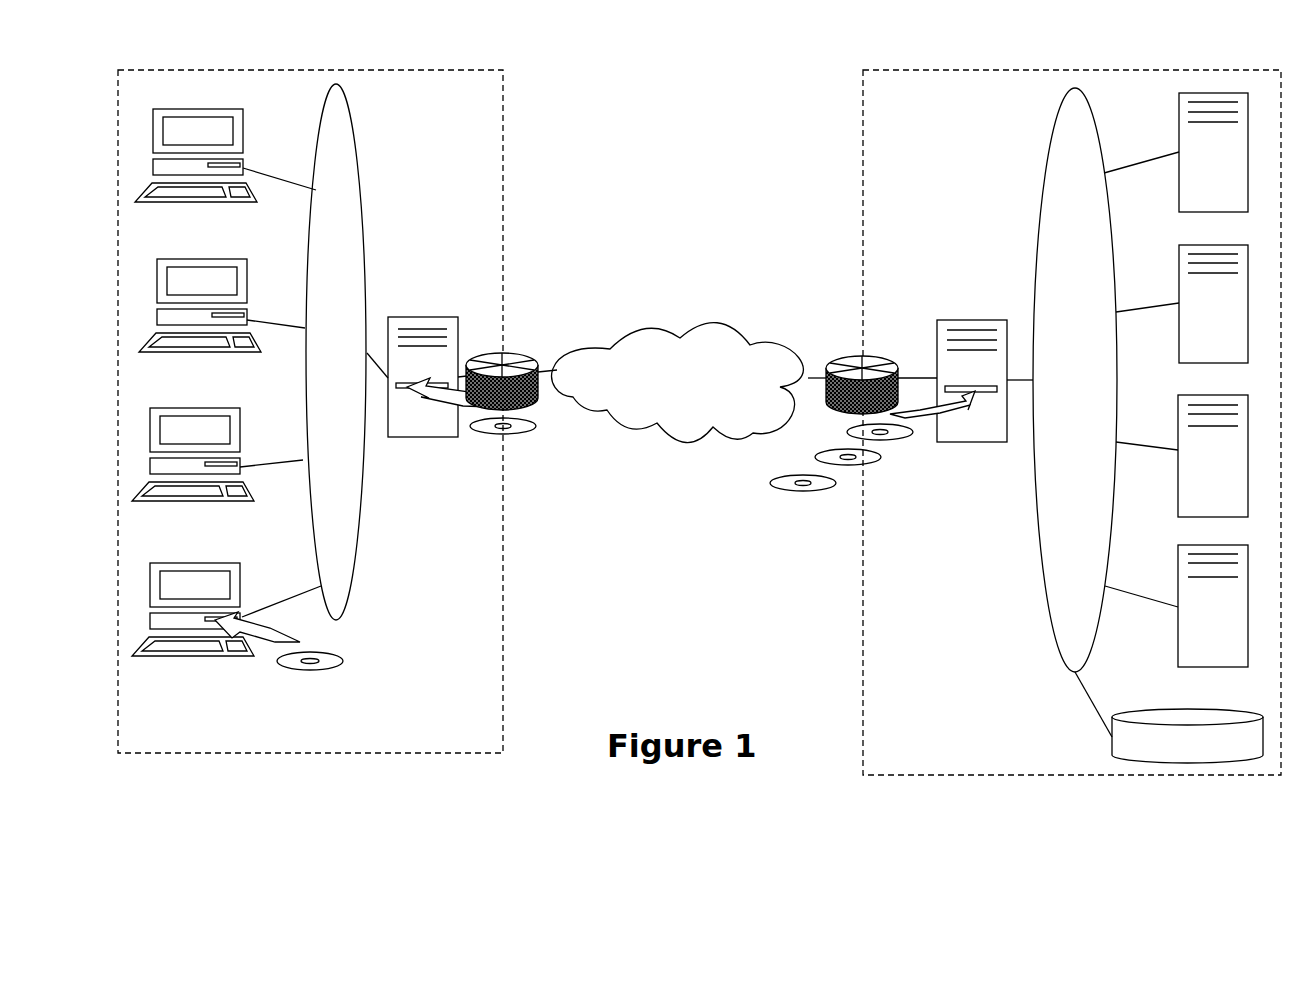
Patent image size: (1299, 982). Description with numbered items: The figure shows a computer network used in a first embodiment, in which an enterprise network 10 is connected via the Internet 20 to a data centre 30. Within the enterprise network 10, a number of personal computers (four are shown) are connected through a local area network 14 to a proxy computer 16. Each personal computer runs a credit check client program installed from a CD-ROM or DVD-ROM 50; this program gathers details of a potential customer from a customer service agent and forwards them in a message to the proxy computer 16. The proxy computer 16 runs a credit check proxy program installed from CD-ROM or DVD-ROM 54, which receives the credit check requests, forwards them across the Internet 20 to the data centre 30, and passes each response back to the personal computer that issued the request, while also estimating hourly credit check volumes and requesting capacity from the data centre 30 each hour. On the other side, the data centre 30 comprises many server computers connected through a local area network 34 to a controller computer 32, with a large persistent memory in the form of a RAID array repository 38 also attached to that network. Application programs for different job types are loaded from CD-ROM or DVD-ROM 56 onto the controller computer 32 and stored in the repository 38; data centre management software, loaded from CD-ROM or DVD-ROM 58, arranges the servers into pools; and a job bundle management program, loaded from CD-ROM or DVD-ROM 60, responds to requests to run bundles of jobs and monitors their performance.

The enterprise network 10 is at (487, 69).
The local area network 14 is at (357, 120).
The proxy computer 16 is at (425, 318).
The Internet 20 is at (748, 327).
The data centre 30 is at (862, 95).
The controller computer 32 is at (952, 320).
The local area network 34 is at (1032, 518).
The repository 38 is at (1200, 712).
The CD-ROM or DVD-ROM 50 is at (340, 658).
The CD-ROM or DVD-ROM 54 is at (486, 432).
The CD-ROM or DVD-ROM 56 is at (888, 440).
The CD-ROM or DVD-ROM 58 is at (853, 465).
The CD-ROM or DVD-ROM 60 is at (810, 491).